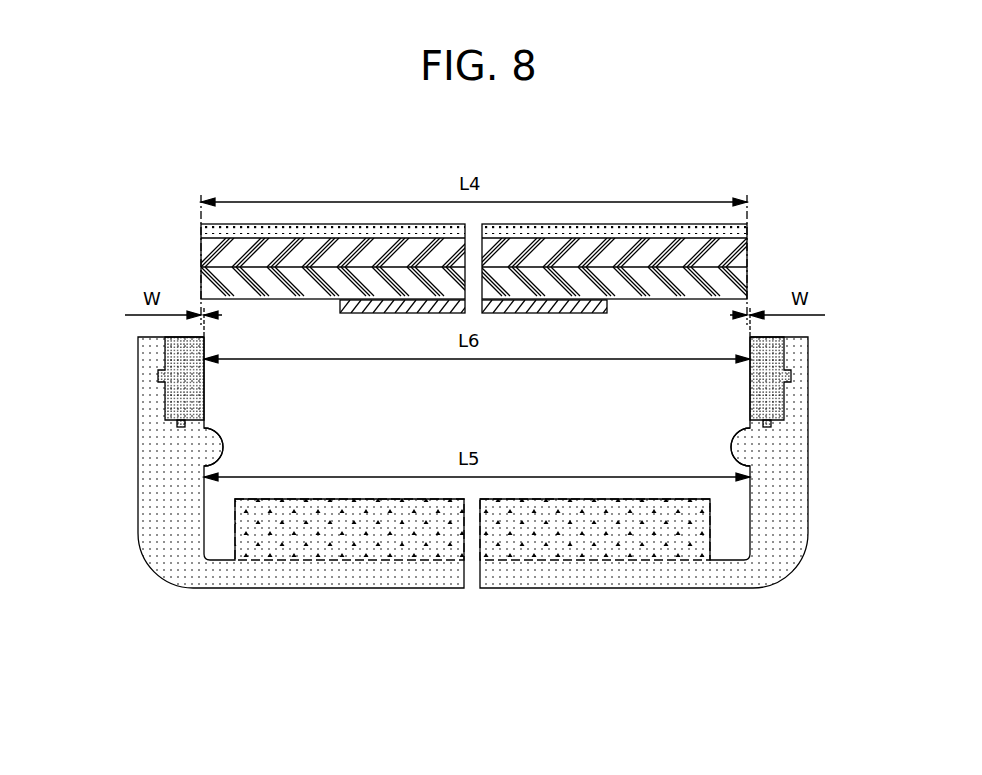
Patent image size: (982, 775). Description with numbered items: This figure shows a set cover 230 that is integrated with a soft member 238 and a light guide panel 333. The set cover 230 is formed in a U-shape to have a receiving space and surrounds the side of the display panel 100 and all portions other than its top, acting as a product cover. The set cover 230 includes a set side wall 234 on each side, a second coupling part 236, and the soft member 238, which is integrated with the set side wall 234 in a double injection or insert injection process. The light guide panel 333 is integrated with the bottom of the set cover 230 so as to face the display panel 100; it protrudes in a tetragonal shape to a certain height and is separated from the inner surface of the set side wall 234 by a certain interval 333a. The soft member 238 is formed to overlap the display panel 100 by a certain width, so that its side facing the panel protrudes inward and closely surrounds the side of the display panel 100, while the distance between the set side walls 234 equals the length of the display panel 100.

The display panel 100 is at (176, 243).
The set cover 230 is at (153, 576).
The set side wall 234 is at (150, 474).
The second coupling part 236 is at (206, 447).
The soft member 238 is at (196, 400).
The light guide panel 333 is at (598, 549).
The certain interval 333a is at (732, 549).